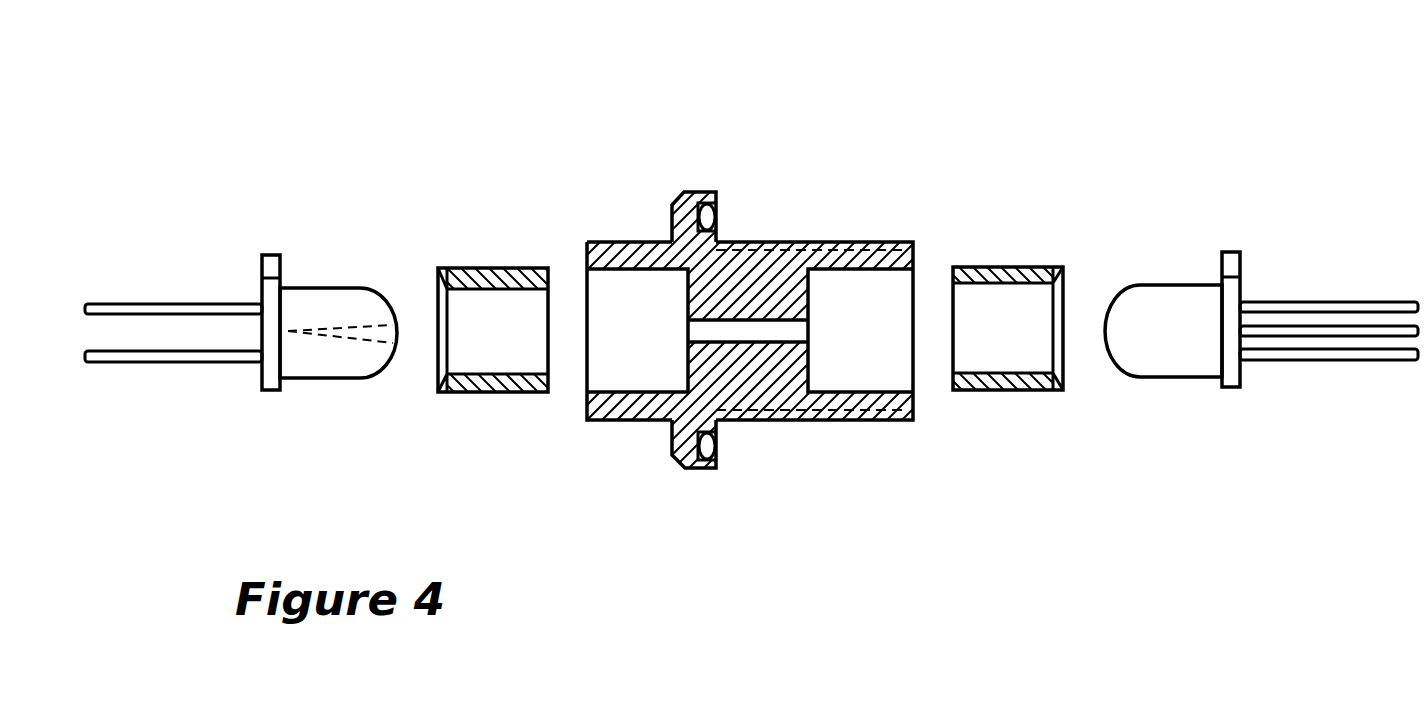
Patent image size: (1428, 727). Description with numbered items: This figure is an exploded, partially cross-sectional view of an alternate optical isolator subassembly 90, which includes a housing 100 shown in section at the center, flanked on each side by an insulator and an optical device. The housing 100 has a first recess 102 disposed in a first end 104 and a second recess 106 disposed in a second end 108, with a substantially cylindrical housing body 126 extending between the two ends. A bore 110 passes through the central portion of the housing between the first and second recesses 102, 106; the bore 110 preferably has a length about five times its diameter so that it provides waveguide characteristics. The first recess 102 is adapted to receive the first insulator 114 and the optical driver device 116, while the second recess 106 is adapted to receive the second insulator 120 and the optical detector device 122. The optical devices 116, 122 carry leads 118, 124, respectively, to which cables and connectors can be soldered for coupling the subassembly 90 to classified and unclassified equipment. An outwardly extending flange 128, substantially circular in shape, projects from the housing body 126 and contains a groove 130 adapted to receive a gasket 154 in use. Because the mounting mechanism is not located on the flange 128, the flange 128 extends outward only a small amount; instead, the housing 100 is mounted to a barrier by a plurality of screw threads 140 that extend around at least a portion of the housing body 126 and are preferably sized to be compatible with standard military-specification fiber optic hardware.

The optical isolator subassembly 90 is at (410, 148).
The housing 100 is at (833, 235).
The first recess 102 is at (600, 362).
The first end 104 is at (599, 219).
The second recess 106 is at (895, 362).
The second end 108 is at (906, 226).
The bore 110 is at (768, 333).
The first insulator 114 is at (481, 268).
The optical driver device 116 is at (320, 288).
The leads 118 is at (185, 304).
The second insulator 120 is at (1000, 267).
The optical detector device 122 is at (1177, 285).
The leads 124 is at (1303, 302).
The housing body 126 is at (830, 422).
The flange 128 is at (693, 192).
The groove 130 is at (710, 203).
The screw threads 140 is at (757, 421).
The gasket 154 is at (717, 218).